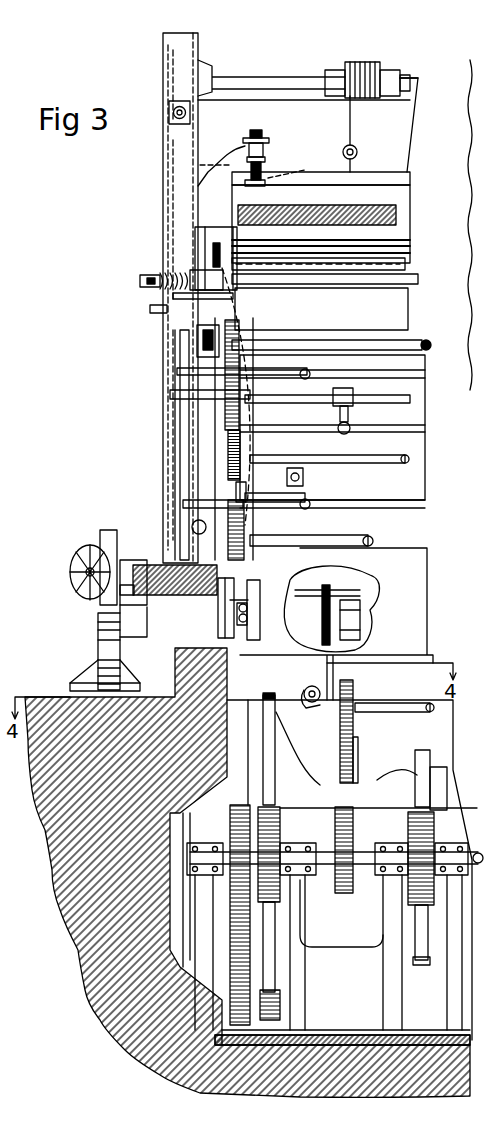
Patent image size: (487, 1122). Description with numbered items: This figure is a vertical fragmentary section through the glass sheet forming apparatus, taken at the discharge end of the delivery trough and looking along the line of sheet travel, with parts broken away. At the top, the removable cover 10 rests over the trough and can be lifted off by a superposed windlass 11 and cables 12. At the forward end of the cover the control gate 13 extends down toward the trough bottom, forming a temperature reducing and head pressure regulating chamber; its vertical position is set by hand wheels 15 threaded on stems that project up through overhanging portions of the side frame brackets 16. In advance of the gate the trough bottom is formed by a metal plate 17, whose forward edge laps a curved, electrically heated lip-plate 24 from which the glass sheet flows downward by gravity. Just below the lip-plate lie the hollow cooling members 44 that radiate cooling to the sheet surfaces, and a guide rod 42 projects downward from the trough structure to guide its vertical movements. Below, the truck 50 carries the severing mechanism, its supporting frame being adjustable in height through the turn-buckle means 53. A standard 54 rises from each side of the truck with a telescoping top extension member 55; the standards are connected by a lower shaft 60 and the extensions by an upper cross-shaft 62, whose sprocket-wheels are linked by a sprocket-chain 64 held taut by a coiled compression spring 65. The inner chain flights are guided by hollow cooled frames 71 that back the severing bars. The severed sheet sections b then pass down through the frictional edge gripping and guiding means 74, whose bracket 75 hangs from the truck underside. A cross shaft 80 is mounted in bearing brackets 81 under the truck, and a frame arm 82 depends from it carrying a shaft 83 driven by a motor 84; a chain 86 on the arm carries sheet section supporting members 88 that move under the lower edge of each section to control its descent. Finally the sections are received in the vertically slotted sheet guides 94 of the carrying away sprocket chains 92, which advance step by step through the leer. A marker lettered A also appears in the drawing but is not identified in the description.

The removable cover 10 is at (380, 172).
The windlass 11 is at (296, 72).
The cables 12 is at (352, 128).
The control gate 13 is at (402, 230).
The hand wheels 15 is at (258, 140).
The side frame brackets 16 is at (197, 183).
The metal plate 17 is at (405, 267).
The lip-plate 24 is at (417, 280).
The guide rod 42 is at (184, 433).
The hollow cooling members 44 is at (400, 315).
The truck 50 is at (182, 605).
The turn-buckle means 53 is at (88, 557).
The standard 54 is at (242, 492).
The top extension member 55 is at (232, 405).
The shaft 60 is at (330, 542).
The cross-shaft 62 is at (425, 345).
The sprocket-chain 64 is at (248, 527).
The coiled compression spring 65 is at (233, 447).
The frames 71 is at (408, 460).
The frictional edge gripping and guiding means 74 is at (257, 605).
The bracket 75 is at (228, 600).
The cross shaft 80 is at (362, 617).
The bearing brackets 81 is at (300, 604).
The frame arm 82 is at (332, 735).
The shaft 83 is at (398, 692).
The motor 84 is at (305, 688).
The chain 86 is at (360, 747).
The sheet section supporting members 88 is at (352, 818).
The sprocket chains 92 is at (280, 890).
The sheet guides 94 is at (420, 770).
The mechanism A is at (197, 330).
The sheet sections b is at (410, 570).